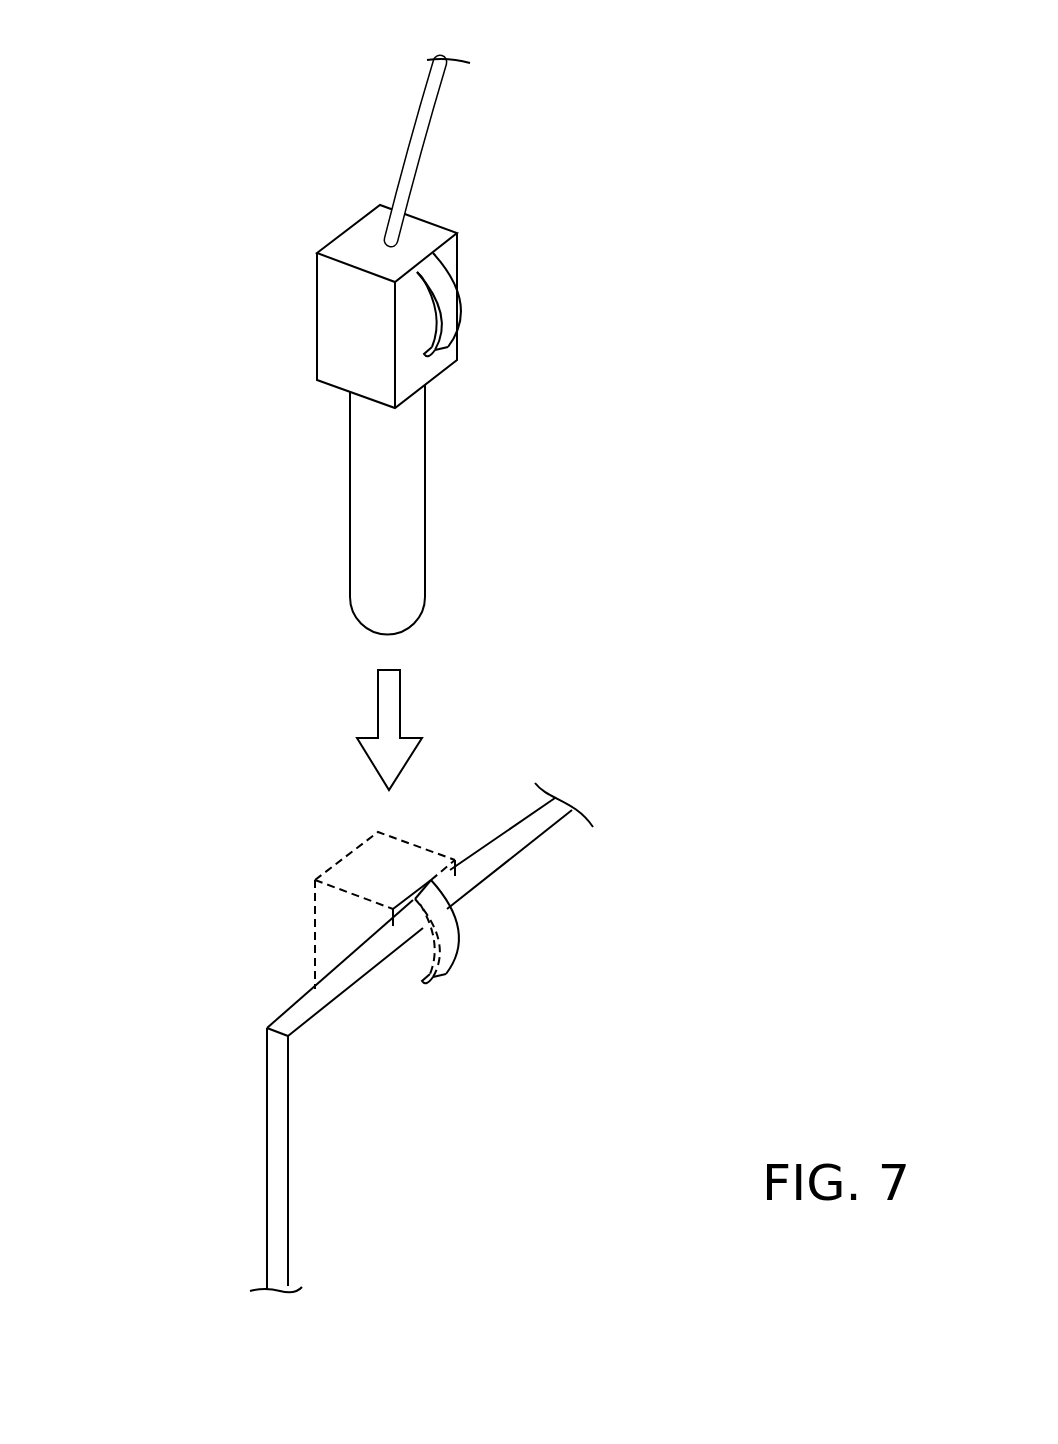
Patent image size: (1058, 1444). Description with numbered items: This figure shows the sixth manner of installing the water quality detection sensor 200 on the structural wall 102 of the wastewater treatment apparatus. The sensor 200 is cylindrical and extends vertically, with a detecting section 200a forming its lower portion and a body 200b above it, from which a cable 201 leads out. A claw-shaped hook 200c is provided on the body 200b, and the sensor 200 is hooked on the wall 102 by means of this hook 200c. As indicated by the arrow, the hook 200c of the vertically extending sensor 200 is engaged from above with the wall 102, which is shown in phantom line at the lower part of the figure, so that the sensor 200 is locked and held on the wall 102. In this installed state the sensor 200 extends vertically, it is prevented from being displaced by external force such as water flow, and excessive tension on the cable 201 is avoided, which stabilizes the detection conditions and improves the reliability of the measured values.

The structural wall 102 is at (275, 1143).
The water quality detection sensor 200 is at (165, 335).
The detecting section 200a is at (373, 508).
The body 200b is at (345, 332).
The hook 200c is at (450, 297).
The cable 201 is at (420, 130).